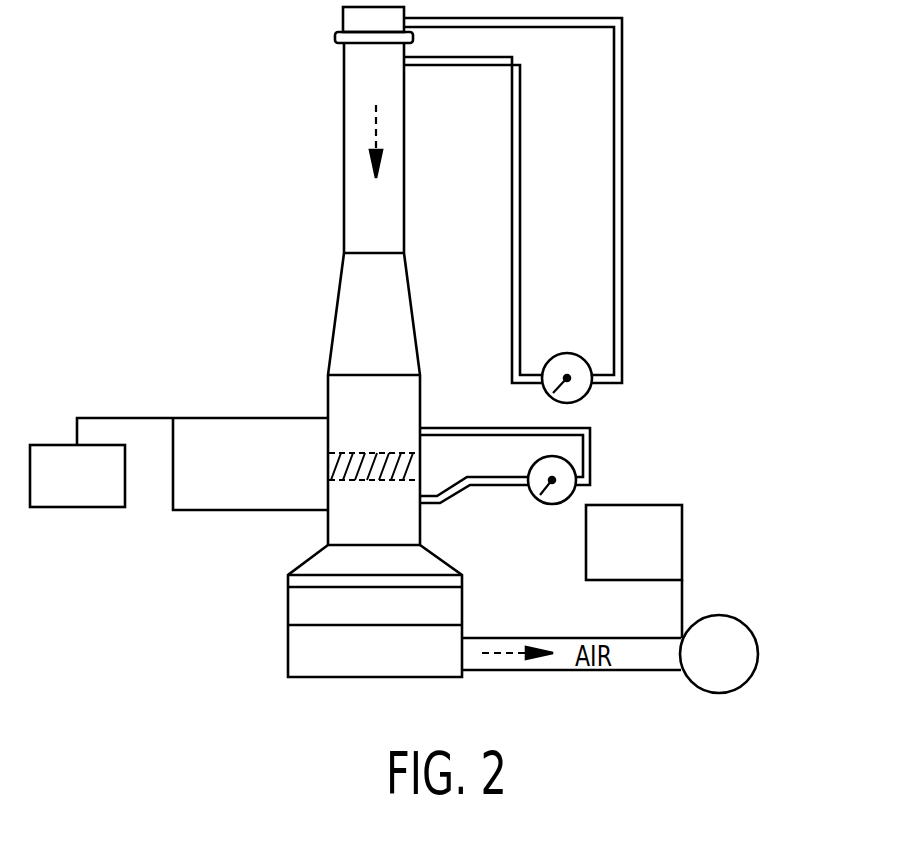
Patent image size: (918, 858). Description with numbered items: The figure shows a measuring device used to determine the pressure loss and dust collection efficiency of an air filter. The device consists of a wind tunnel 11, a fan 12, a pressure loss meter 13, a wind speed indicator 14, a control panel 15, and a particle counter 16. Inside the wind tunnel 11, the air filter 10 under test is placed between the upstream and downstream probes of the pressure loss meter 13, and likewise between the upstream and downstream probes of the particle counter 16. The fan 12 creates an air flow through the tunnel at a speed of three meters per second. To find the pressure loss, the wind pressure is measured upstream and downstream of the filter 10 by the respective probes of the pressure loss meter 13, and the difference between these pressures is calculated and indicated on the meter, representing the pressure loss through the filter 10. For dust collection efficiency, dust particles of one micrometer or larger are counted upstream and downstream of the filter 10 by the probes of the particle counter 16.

The air filter 10 is at (335, 457).
The wind tunnel 11 is at (348, 307).
The fan 12 is at (305, 608).
The pressure loss meter 13 is at (552, 505).
The wind speed indicator 14 is at (585, 397).
The control panel 15 is at (660, 543).
The particle counter 16 is at (78, 492).